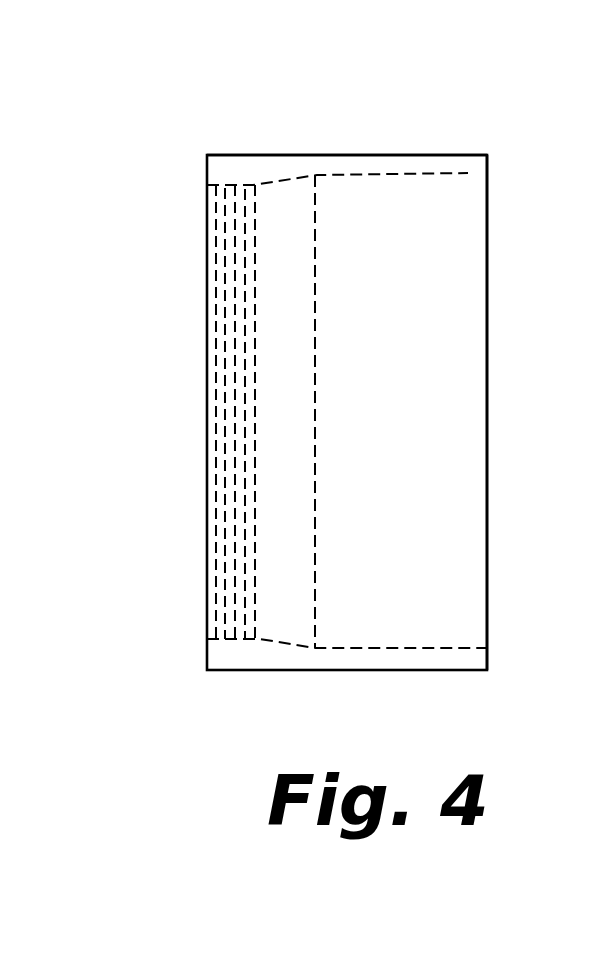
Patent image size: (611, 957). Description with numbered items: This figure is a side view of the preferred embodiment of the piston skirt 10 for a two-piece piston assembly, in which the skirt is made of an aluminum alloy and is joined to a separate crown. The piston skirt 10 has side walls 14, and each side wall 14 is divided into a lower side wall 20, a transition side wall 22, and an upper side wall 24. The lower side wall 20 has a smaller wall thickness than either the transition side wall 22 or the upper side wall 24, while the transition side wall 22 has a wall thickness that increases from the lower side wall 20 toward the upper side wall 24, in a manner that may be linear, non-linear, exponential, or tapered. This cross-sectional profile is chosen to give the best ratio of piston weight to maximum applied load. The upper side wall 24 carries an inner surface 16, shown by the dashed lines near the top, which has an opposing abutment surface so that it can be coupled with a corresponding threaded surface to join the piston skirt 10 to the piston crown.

The piston skirt 10 is at (154, 156).
The side walls 14 is at (363, 173).
The inner surface 16 is at (227, 200).
The lower side wall 20 is at (468, 173).
The transition side wall 22 is at (243, 167).
The upper side wall 24 is at (217, 157).